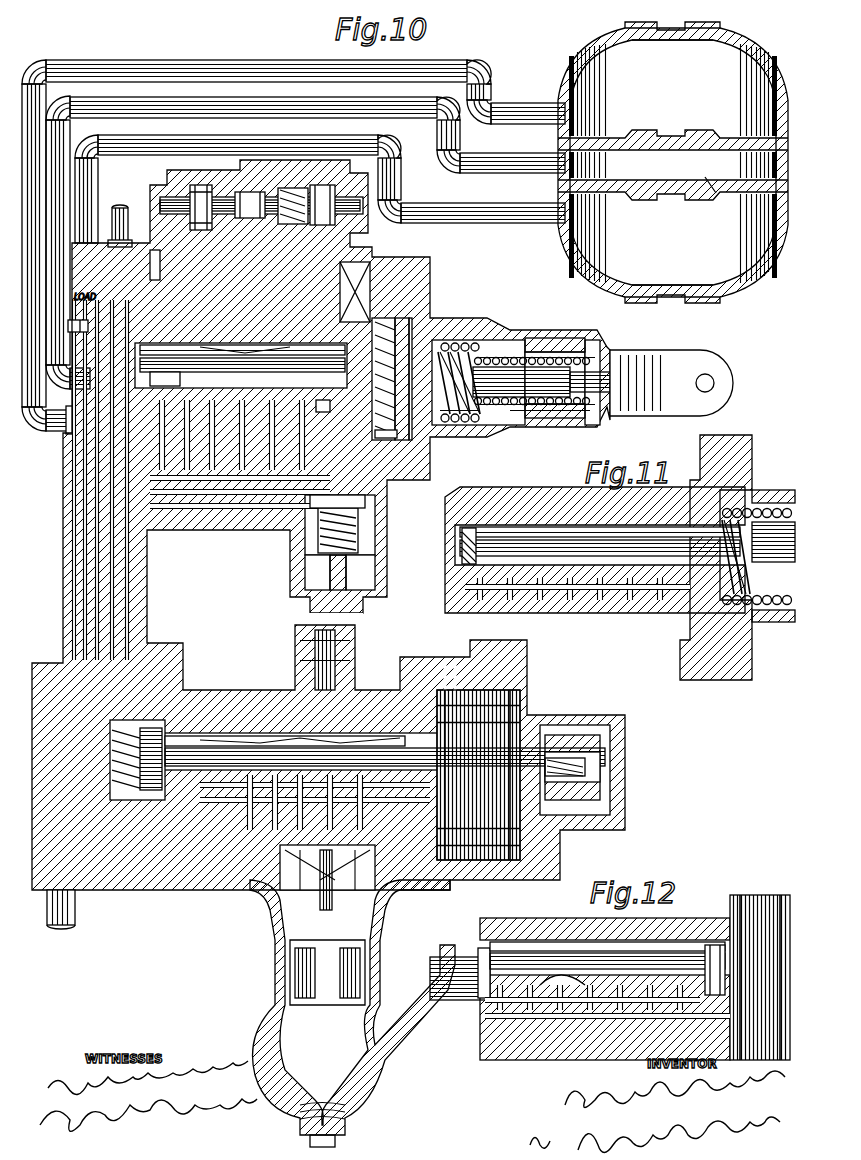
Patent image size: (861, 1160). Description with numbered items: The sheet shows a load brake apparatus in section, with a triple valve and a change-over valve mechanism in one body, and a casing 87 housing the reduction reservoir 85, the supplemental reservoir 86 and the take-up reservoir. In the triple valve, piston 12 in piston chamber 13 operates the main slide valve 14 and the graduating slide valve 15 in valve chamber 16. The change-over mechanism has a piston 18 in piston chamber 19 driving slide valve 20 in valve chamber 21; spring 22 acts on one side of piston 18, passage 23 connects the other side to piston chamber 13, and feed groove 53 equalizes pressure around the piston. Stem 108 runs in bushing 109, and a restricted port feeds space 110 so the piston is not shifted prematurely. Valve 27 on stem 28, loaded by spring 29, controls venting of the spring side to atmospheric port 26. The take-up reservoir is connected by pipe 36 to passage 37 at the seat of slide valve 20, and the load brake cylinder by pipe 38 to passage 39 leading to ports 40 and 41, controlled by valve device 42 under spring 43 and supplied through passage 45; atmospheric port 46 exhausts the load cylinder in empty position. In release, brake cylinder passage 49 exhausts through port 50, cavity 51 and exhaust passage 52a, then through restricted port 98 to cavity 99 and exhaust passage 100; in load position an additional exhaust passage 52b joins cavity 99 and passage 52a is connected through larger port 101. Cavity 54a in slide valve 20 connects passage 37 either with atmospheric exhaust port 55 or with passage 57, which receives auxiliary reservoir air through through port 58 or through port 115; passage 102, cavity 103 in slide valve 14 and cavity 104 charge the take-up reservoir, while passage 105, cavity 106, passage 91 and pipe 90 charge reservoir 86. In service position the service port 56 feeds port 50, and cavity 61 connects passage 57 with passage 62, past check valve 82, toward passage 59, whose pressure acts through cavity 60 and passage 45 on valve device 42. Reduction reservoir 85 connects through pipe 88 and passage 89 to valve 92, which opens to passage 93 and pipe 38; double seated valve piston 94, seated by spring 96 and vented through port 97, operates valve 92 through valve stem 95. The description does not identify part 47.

In FIG. 10, the piston 12 is at (455, 797).
In FIG. 12, the piston 12 is at (760, 977).
In FIG. 10, the piston chamber 13 is at (495, 735).
In FIG. 10, the main slide valve 14 is at (400, 778).
In FIG. 12, the main slide valve 14 is at (712, 990).
In FIG. 10, the graduating slide valve 15 is at (248, 755).
In FIG. 10, the valve chamber 16 is at (185, 700).
In FIG. 10, the piston 18 is at (395, 445).
In FIG. 11, the piston 18 is at (748, 608).
In FIG. 10, the piston chamber 19 is at (425, 315).
In FIG. 10, the slide valve 20 is at (308, 400).
In FIG. 11, the slide valve 20 is at (600, 549).
In FIG. 10, the valve chamber 21 is at (347, 342).
In FIG. 10, the spring 22 is at (448, 335).
In FIG. 11, the spring 22 is at (758, 506).
In FIG. 10, the passage 23 is at (165, 338).
In FIG. 10, the atmospheric port 26 is at (562, 430).
In FIG. 10, the valve 27 is at (455, 438).
In FIG. 10, the stem 28 is at (492, 365).
In FIG. 10, the spring 29 is at (547, 338).
In FIG. 10, the pipe 36 is at (500, 158).
In FIG. 10, the passage 37 is at (170, 350).
In FIG. 11, the passage 37 is at (575, 600).
In FIG. 10, the pipe 38 is at (80, 336).
In FIG. 10, the passage 39 is at (110, 340).
In FIG. 10, the port 40 is at (295, 530).
In FIG. 10, the port 41 is at (298, 555).
In FIG. 10, the valve device 42 is at (372, 530).
In FIG. 10, the spring 43 is at (372, 545).
In FIG. 10, the passage 45 is at (215, 412).
In FIG. 11, the passage 45 is at (530, 600).
In FIG. 10, the atmospheric port 46 is at (362, 606).
In FIG. 10, the passage 47 is at (455, 892).
In FIG. 10, the brake cylinder passage 49 is at (74, 909).
In FIG. 10, the port 50 is at (234, 893).
In FIG. 12, the port 50 is at (520, 1020).
In FIG. 10, the cavity 51 is at (285, 790).
In FIG. 12, the cavity 51 is at (590, 995).
In FIG. 10, the exhaust passage 52a is at (205, 912).
In FIG. 11, the exhaust passage 52a is at (640, 600).
In FIG. 12, the exhaust passage 52a is at (572, 1020).
In FIG. 10, the additional exhaust passage 52b is at (178, 902).
In FIG. 11, the additional exhaust passage 52b is at (612, 600).
In FIG. 12, the additional exhaust passage 52b is at (540, 1020).
In FIG. 10, the feed groove 53 is at (441, 467).
In FIG. 10, the cavity 54a is at (237, 410).
In FIG. 11, the cavity 54a is at (565, 578).
In FIG. 10, the atmospheric exhaust port 55 is at (240, 515).
In FIG. 11, the atmospheric exhaust port 55 is at (548, 600).
In FIG. 12, the service port 56 is at (546, 993).
In FIG. 10, the passage 57 is at (128, 903).
In FIG. 11, the passage 57 is at (595, 600).
In FIG. 12, the passage 57 is at (635, 1020).
In FIG. 10, the through port 58 is at (225, 786).
In FIG. 10, the passage 59 is at (72, 660).
In FIG. 11, the passage 59 is at (510, 600).
In FIG. 10, the cavity 60 is at (185, 410).
In FIG. 11, the cavity 60 is at (540, 578).
In FIG. 10, the cavity 61 is at (325, 795).
In FIG. 12, the cavity 61 is at (625, 995).
In FIG. 10, the passage 62 is at (500, 905).
In FIG. 12, the passage 62 is at (600, 1020).
In FIG. 10, the check valve 82 is at (340, 665).
In FIG. 10, the reduction reservoir 85 is at (745, 285).
In FIG. 10, the supplemental reservoir 86 is at (720, 55).
In FIG. 10, the casing 87 is at (558, 66).
In FIG. 10, the pipe 88 is at (506, 216).
In FIG. 10, the passage 89 is at (237, 265).
In FIG. 10, the pipe 90 is at (445, 66).
In FIG. 10, the passage 91 is at (72, 456).
In FIG. 11, the passage 91 is at (485, 600).
In FIG. 10, the valve 92 is at (198, 195).
In FIG. 10, the passage 93 is at (200, 232).
In FIG. 10, the double seated valve piston 94 is at (293, 226).
In FIG. 10, the valve stem 95 is at (250, 198).
In FIG. 10, the spring 96 is at (322, 228).
In FIG. 10, the port 97 is at (394, 212).
In FIG. 10, the restricted port 98 is at (325, 399).
In FIG. 11, the restricted port 98 is at (668, 578).
In FIG. 10, the cavity 99 is at (278, 405).
In FIG. 11, the cavity 99 is at (697, 548).
In FIG. 10, the exhaust passage 100 is at (165, 248).
In FIG. 11, the exhaust passage 100 is at (668, 610).
In FIG. 11, the port 101 is at (625, 578).
In FIG. 10, the passage 102 is at (385, 948).
In FIG. 12, the passage 102 is at (680, 1020).
In FIG. 10, the cavity 103 is at (368, 795).
In FIG. 12, the cavity 103 is at (675, 995).
In FIG. 11, the cavity 104 is at (600, 556).
In FIG. 10, the passage 105 is at (147, 615).
In FIG. 11, the passage 105 is at (462, 585).
In FIG. 11, the cavity 106 is at (488, 578).
In FIG. 10, the stem 108 is at (345, 336).
In FIG. 10, the bushing 109 is at (432, 268).
In FIG. 10, the space 110 is at (383, 379).
In FIG. 10, the through port 115 is at (381, 804).
In FIG. 12, the through port 115 is at (658, 975).